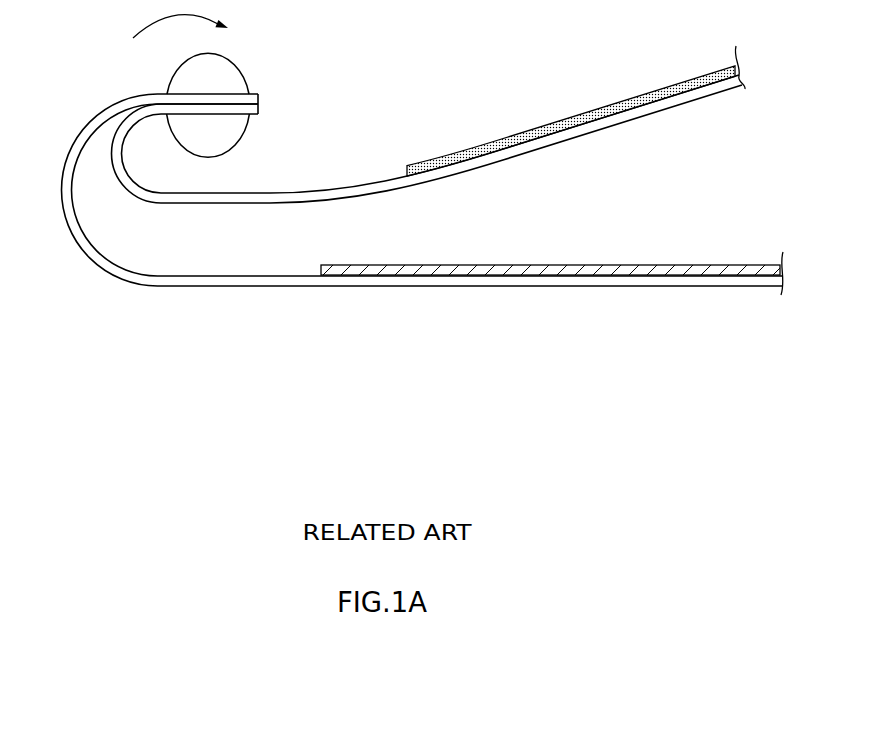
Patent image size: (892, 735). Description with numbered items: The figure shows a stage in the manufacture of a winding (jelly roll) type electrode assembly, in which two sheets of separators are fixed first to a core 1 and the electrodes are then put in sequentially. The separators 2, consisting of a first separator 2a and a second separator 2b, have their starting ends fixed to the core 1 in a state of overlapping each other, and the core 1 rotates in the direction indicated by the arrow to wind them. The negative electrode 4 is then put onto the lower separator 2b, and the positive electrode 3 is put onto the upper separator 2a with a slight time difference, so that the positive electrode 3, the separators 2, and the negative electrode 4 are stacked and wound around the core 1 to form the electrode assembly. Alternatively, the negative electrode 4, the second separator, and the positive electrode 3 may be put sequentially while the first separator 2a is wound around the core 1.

The core 1 is at (237, 75).
The separators 2 is at (423, 225).
The first separator 2a is at (197, 193).
The second separator 2b is at (277, 281).
The positive electrode 3 is at (580, 118).
The negative electrode 4 is at (630, 270).